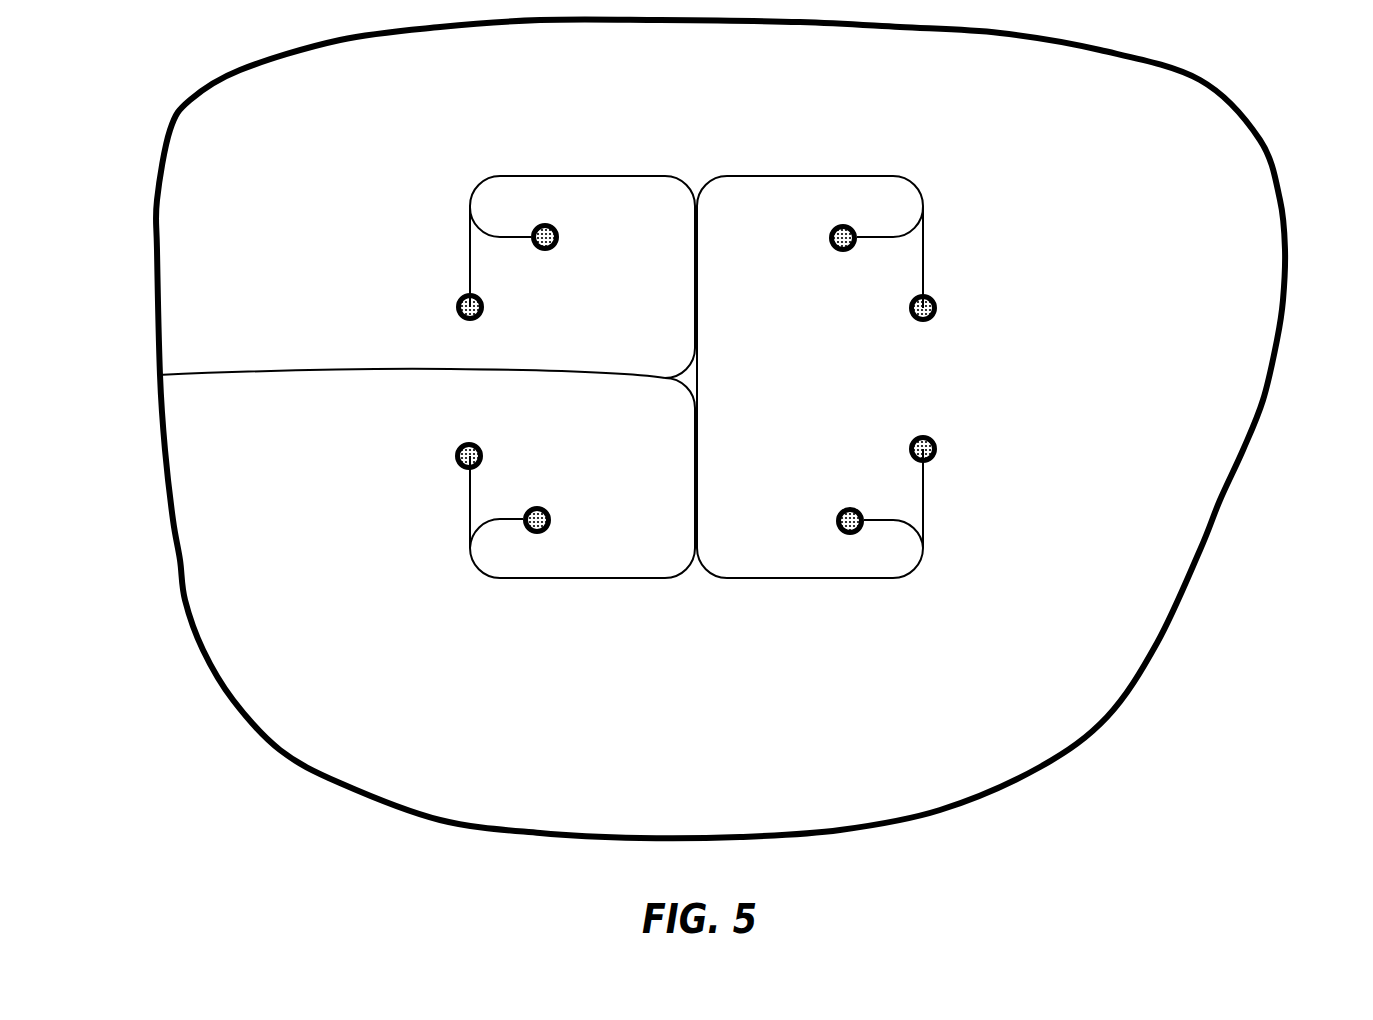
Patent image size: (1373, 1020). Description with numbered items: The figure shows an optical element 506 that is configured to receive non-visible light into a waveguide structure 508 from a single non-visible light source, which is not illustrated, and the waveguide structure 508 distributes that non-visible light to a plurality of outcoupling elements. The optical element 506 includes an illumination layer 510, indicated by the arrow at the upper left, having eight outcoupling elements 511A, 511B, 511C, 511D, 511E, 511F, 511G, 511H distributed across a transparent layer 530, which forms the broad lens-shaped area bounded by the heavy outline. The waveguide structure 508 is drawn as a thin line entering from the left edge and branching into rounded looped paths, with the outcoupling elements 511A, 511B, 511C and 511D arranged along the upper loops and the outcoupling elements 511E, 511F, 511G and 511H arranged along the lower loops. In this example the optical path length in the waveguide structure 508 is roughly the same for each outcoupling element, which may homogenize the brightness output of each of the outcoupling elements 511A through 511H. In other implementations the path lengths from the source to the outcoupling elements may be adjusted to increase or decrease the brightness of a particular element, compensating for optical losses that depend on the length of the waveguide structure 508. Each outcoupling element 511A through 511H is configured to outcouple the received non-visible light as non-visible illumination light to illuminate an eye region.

The illumination layer 510 is at (156, 118).
The optical element 506 is at (1366, 95).
The transparent layer 530 is at (1133, 147).
The waveguide structure 508 is at (322, 372).
The outcoupling element 511A is at (456, 306).
The outcoupling element 511B is at (558, 234).
The outcoupling element 511C is at (828, 238).
The outcoupling element 511D is at (906, 308).
The outcoupling element 511E is at (906, 449).
The outcoupling element 511F is at (833, 523).
The outcoupling element 511G is at (550, 516).
The outcoupling element 511H is at (456, 456).